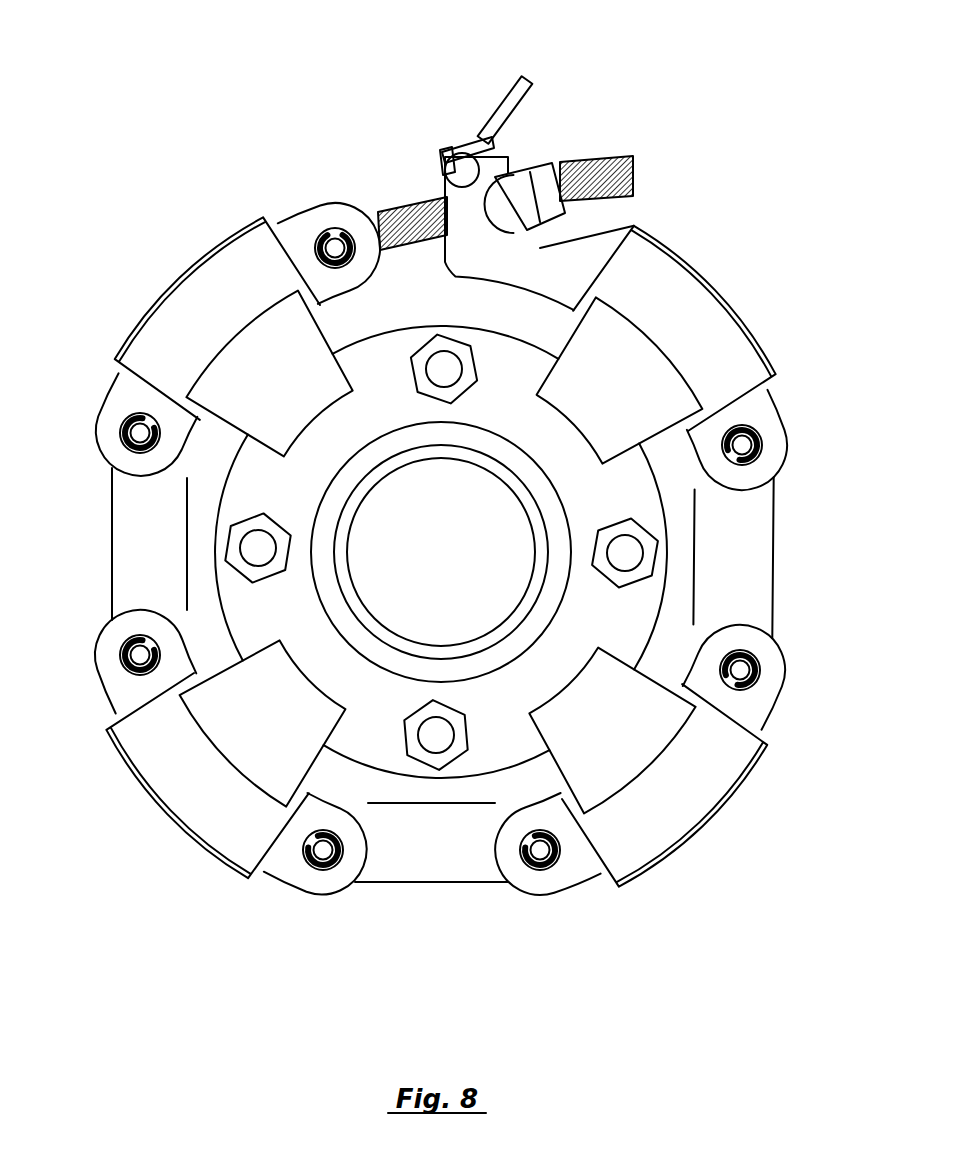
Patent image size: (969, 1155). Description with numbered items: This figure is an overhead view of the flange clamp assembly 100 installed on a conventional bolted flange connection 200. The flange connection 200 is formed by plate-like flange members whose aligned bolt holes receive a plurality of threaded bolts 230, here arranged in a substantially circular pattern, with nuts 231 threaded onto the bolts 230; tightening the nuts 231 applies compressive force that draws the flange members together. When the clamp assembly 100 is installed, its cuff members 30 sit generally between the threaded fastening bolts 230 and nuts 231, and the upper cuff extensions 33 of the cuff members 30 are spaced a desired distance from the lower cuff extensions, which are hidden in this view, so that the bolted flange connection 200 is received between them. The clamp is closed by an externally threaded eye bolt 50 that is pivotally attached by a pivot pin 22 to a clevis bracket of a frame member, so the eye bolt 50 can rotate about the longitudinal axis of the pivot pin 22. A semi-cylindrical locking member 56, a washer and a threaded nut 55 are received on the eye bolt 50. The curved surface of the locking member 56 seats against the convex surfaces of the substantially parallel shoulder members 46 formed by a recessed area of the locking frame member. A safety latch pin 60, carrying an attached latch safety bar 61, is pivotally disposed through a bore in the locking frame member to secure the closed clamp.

The clamp assembly 100 is at (423, 544).
The bolted flange connection 200 is at (672, 514).
The cuff members 30 is at (217, 380).
The upper cuff extensions 33 is at (352, 390).
The pivot pin 22 is at (329, 230).
The threaded bolts 230 is at (428, 372).
The nuts 231 is at (455, 397).
The eye bolt 50 is at (393, 213).
The shoulder members 46 is at (502, 217).
The threaded nut 55 is at (543, 173).
The semi-cylindrical locking member 56 is at (518, 167).
The safety latch pin 60 is at (443, 153).
The latch safety bar 61 is at (510, 80).